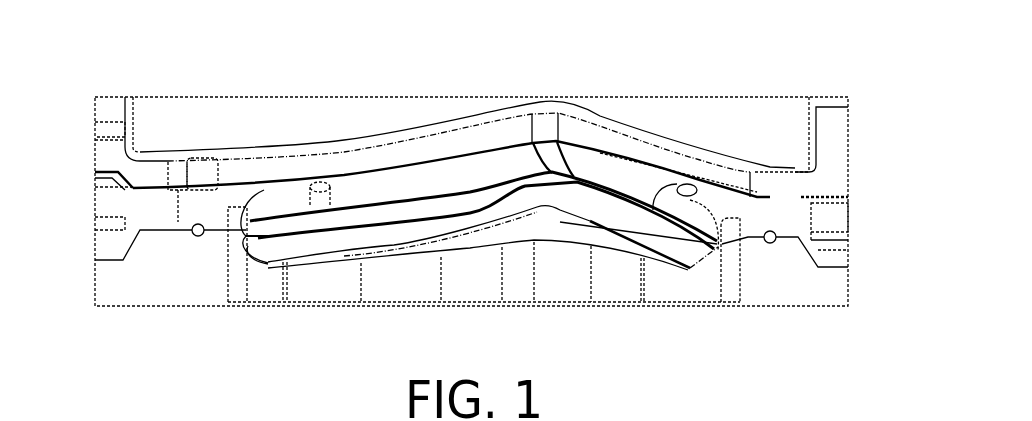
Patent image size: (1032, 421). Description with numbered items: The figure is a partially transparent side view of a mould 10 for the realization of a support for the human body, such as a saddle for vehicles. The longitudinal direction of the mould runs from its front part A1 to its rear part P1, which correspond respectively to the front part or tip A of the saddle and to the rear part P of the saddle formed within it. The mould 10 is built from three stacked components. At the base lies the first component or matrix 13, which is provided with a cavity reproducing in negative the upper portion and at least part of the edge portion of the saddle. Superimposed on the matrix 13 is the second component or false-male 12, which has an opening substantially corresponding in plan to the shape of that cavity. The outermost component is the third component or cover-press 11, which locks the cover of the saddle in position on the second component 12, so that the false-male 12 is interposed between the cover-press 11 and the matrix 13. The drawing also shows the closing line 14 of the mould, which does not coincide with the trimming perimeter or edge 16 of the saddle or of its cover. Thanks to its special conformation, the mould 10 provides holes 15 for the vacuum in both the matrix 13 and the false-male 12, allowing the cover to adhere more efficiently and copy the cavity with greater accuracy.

The mould 10 is at (755, 92).
The third component or cover-press 11 is at (850, 97).
The second component or false-male 12 is at (90, 175).
The first component or matrix 13 is at (90, 263).
The closing line of the mould 14 is at (452, 212).
The holes for the vacuum 15 is at (264, 235).
The trimming perimeter or edge 16 is at (292, 224).
The front part (tip) of the saddle A is at (258, 258).
The front part of the mould A1 is at (79, 132).
The rear part of the saddle P is at (708, 264).
The rear part of the mould P1 is at (862, 247).